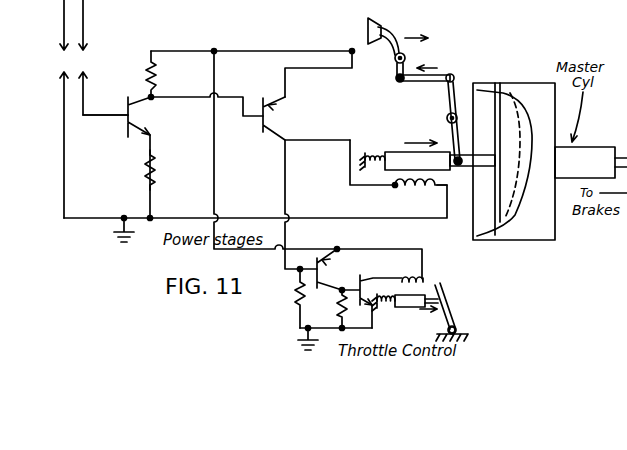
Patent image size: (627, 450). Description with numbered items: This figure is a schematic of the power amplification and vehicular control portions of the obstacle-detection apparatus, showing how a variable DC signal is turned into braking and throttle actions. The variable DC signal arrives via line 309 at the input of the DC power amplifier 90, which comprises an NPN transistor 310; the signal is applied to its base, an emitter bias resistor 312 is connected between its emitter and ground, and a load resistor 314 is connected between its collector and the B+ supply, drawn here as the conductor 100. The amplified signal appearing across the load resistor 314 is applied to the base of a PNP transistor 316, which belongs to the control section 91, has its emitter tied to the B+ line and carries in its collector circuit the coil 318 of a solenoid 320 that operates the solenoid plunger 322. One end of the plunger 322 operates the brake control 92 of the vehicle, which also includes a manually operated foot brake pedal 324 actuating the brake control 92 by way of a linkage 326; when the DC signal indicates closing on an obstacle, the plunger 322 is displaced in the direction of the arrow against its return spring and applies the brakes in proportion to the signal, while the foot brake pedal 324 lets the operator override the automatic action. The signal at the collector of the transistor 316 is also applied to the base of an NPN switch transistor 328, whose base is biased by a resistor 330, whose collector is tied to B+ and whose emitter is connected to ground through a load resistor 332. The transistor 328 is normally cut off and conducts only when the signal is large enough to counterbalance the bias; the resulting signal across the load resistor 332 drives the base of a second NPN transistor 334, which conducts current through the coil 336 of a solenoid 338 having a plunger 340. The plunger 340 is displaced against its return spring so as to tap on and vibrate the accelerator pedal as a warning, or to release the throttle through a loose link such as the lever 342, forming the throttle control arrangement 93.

The DC power amplifier 90 is at (158, 223).
The control section 91 is at (273, 88).
The brake control 92 is at (391, 143).
The throttle control arrangement 93 is at (423, 312).
The power supply conductor 100 is at (64, 145).
The line 309 is at (110, 116).
The NPN transistor 310 is at (125, 110).
The emitter bias resistor 312 is at (156, 167).
The load resistor 314 is at (156, 77).
The PNP transistor 316 is at (280, 124).
The coil 318 is at (396, 189).
The solenoid 320 is at (401, 175).
The solenoid plunger 322 is at (415, 150).
The foot brake pedal 324 is at (383, 25).
The linkage 326 is at (455, 92).
The NPN switch transistor 328 is at (333, 257).
The resistor 330 is at (292, 300).
The load resistor 332 is at (338, 308).
The second NPN transistor 334 is at (366, 296).
The coil 336 is at (421, 273).
The solenoid 338 is at (445, 283).
The plunger 340 is at (402, 308).
The lever pivot 342 is at (452, 310).